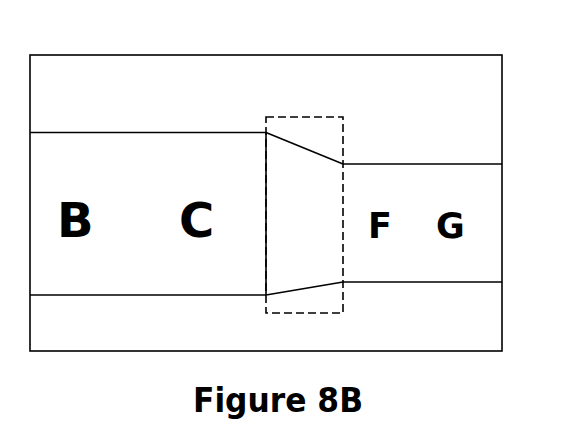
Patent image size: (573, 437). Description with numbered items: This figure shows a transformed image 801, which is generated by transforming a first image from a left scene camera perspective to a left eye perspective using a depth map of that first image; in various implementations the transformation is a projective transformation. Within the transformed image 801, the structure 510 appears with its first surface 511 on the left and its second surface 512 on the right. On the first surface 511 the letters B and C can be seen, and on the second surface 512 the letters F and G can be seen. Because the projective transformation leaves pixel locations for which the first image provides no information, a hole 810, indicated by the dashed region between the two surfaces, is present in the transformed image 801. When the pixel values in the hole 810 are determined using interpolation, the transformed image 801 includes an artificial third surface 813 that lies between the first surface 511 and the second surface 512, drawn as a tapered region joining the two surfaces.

The transformed image 801 is at (315, 55).
The structure 510 is at (71, 132).
The first surface 511 is at (252, 178).
The second surface 512 is at (427, 196).
The artificial third surface 813 is at (328, 202).
The hole 810 is at (300, 117).